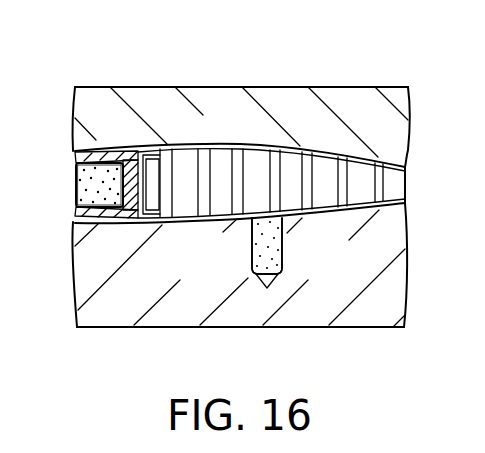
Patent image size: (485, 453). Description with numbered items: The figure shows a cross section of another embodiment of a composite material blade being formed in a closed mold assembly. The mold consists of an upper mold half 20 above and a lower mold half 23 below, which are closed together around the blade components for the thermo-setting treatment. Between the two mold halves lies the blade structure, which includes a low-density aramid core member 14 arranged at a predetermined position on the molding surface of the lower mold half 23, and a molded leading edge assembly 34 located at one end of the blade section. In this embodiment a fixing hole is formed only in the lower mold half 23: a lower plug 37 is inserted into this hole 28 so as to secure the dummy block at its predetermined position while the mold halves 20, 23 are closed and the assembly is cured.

The aramid core member 14 is at (223, 158).
The upper mold half 20 is at (325, 93).
The lower mold half 23 is at (349, 322).
The fixing hole 28 is at (252, 250).
The leading edge assembly 34 is at (99, 150).
The lower plug 37 is at (282, 251).